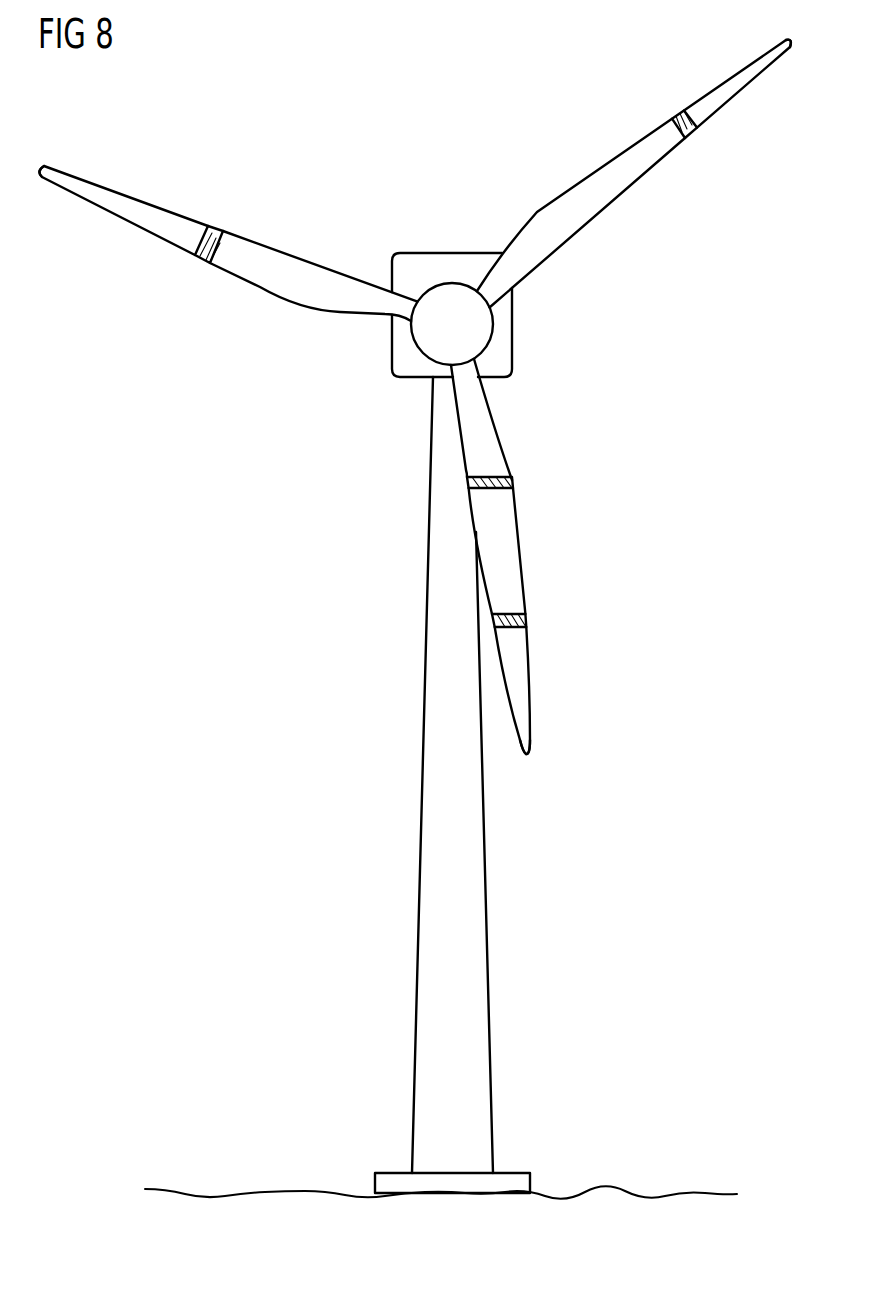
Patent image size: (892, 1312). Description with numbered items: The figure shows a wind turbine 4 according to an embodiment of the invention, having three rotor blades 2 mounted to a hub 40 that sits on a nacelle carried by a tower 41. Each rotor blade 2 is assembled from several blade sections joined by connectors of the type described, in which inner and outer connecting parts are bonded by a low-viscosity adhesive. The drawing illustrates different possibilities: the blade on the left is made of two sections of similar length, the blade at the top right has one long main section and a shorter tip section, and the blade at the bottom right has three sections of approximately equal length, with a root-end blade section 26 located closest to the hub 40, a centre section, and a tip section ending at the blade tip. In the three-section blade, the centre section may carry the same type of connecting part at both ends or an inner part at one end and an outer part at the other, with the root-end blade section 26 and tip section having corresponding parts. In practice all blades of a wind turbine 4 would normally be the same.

The wind turbine rotor blade 2 is at (266, 283).
The wind turbine 4 is at (279, 549).
The root-end blade section 26 is at (498, 437).
The hub 40 is at (478, 329).
The tower 41 is at (475, 893).